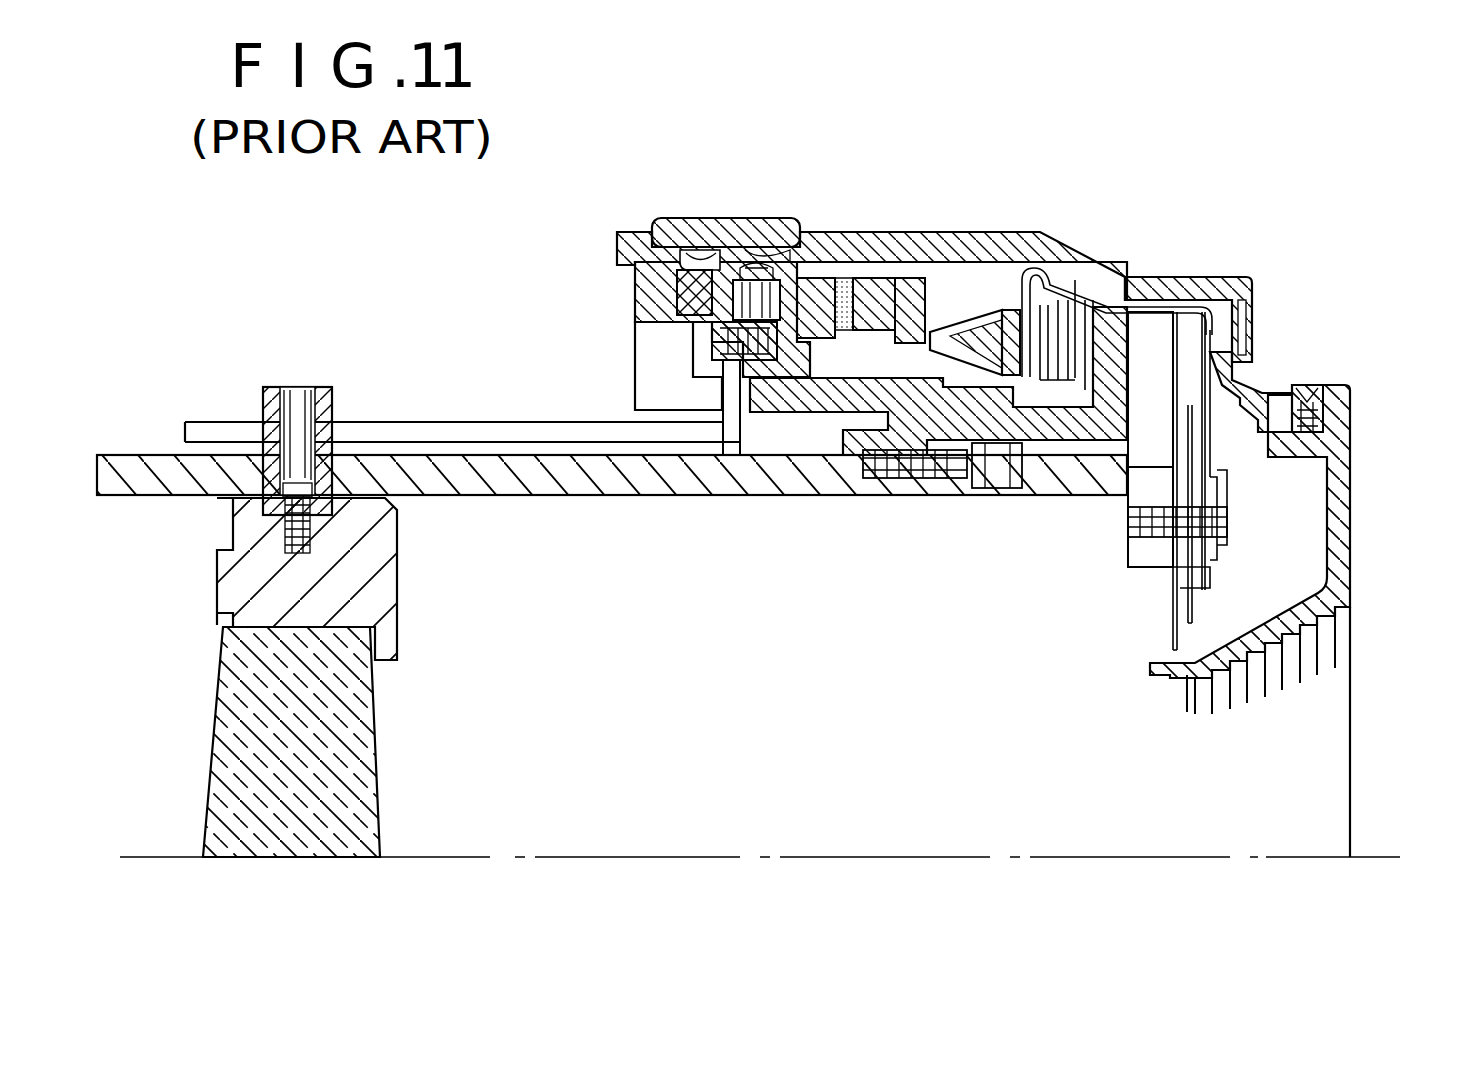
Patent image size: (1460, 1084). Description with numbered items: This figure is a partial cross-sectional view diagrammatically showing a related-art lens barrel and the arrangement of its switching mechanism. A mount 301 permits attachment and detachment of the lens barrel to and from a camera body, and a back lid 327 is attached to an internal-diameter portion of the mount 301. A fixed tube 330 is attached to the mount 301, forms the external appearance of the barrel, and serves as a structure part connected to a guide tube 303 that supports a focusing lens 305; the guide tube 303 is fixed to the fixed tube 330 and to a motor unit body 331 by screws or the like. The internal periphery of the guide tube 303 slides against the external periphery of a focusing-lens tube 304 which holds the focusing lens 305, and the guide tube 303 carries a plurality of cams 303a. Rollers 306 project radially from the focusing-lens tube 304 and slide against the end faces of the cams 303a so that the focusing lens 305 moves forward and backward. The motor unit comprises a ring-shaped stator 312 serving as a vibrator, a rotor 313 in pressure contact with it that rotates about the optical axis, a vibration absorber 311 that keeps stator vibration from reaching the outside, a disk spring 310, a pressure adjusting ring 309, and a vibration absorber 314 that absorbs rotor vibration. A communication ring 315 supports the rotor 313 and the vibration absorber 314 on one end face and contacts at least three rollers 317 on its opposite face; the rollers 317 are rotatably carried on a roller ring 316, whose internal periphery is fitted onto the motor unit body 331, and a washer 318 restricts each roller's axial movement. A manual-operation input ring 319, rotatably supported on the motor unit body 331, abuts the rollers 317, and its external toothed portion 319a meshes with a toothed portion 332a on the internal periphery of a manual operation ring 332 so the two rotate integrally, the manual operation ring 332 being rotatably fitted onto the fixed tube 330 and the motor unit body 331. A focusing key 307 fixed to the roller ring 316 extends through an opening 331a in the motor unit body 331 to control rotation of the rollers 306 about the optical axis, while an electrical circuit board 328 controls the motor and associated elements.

The mount 301 is at (1258, 385).
The guide tube 303 is at (680, 495).
The cams 303a is at (332, 450).
The focusing-lens tube 304 is at (355, 580).
The focusing lens 305 is at (345, 742).
The rollers 306 is at (330, 507).
The focusing key 307 is at (570, 435).
The pressure adjusting ring 309 is at (1082, 290).
The disk spring 310 is at (1035, 345).
The vibration absorber 311 is at (967, 330).
The stator 312 is at (940, 330).
The rotor 313 is at (880, 278).
The vibration absorber 314 is at (820, 278).
The communication ring 315 is at (845, 278).
The roller ring 316 is at (757, 268).
The rollers 317 is at (652, 245).
The washer 318 is at (800, 400).
The manual-operation input ring 319 is at (655, 305).
The toothed portion 319a is at (693, 250).
The back lid 327 is at (1335, 515).
The electrical circuit board 328 is at (1150, 482).
The fixed tube 330 is at (1158, 277).
The motor unit body 331 is at (1090, 355).
The opening 331a is at (650, 375).
The manual operation ring 332 is at (775, 240).
The toothed portion 332a is at (733, 245).